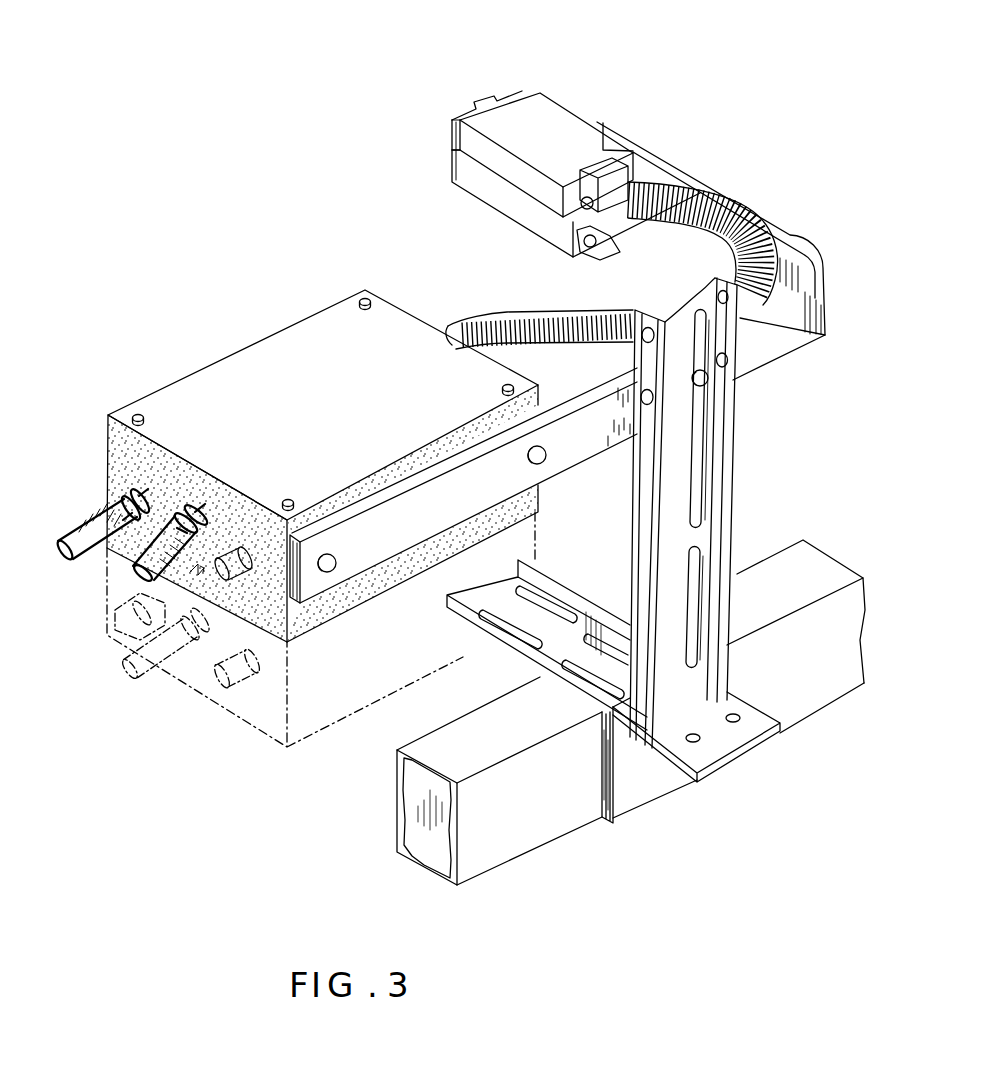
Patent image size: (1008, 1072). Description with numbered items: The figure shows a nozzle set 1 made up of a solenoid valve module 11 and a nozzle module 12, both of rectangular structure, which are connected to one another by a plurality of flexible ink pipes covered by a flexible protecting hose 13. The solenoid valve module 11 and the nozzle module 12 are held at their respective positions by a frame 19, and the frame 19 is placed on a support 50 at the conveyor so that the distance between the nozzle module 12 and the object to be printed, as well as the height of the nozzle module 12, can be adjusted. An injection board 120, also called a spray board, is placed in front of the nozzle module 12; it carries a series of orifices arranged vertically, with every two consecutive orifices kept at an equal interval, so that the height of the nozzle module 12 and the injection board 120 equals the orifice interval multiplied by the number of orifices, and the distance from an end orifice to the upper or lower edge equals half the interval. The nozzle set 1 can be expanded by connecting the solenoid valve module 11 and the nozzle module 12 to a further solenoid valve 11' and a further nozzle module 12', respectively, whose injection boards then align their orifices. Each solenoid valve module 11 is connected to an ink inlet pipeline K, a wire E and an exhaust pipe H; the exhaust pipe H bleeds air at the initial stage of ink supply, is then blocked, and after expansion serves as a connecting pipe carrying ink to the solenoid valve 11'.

The nozzle set 1 is at (357, 186).
The solenoid valve module 11 is at (322, 466).
The solenoid valve 11' is at (321, 659).
The nozzle module 12 is at (542, 129).
The nozzle module 12' is at (576, 196).
The injection board 120 is at (452, 131).
The flexible protecting hose 13 is at (555, 311).
The frame 19 is at (768, 454).
The support 50 is at (818, 560).
The ink inlet pipeline K is at (106, 501).
The wire E is at (172, 518).
The exhaust pipe H is at (233, 545).